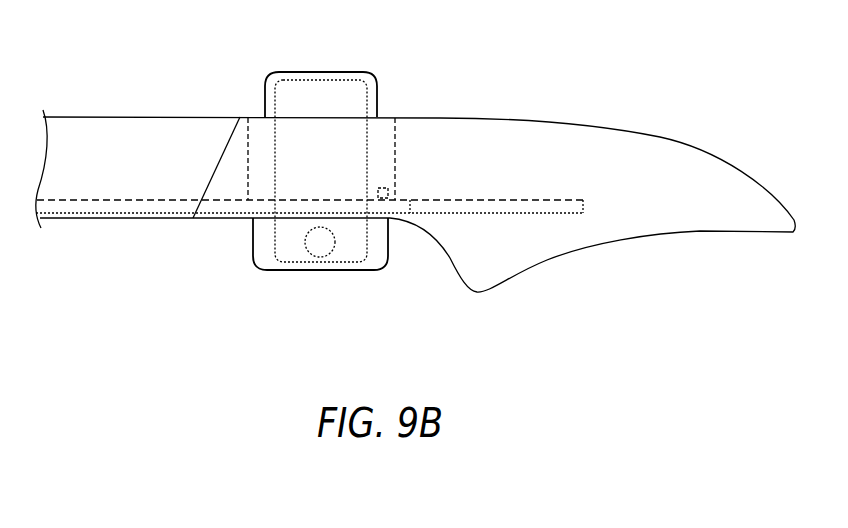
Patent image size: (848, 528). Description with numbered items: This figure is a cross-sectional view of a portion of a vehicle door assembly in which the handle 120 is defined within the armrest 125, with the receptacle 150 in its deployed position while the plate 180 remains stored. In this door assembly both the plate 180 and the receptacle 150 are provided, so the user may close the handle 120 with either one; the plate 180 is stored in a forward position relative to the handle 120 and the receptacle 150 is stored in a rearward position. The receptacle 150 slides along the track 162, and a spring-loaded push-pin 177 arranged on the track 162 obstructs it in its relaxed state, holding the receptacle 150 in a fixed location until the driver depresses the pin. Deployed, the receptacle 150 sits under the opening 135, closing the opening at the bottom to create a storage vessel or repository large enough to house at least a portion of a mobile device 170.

The armrest 125 is at (134, 160).
The handle 120 is at (398, 153).
The mobile device 170 is at (335, 102).
The receptacle 150 is at (255, 238).
The opening 135 is at (316, 143).
The track 162 is at (512, 198).
The plate 180 is at (572, 200).
The push-pin 177 is at (388, 193).